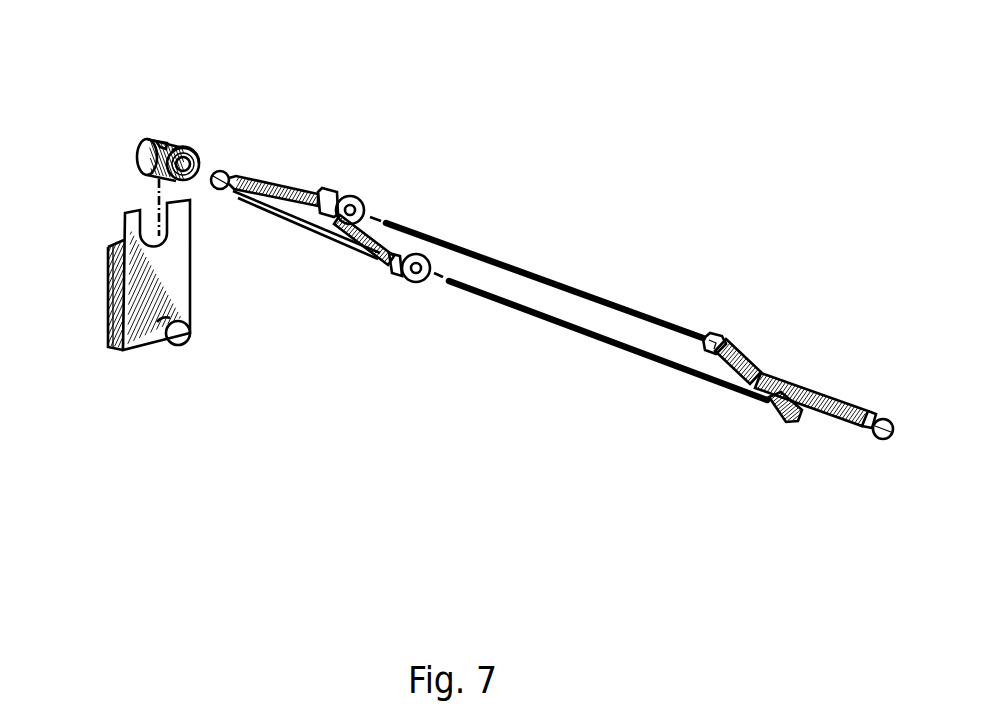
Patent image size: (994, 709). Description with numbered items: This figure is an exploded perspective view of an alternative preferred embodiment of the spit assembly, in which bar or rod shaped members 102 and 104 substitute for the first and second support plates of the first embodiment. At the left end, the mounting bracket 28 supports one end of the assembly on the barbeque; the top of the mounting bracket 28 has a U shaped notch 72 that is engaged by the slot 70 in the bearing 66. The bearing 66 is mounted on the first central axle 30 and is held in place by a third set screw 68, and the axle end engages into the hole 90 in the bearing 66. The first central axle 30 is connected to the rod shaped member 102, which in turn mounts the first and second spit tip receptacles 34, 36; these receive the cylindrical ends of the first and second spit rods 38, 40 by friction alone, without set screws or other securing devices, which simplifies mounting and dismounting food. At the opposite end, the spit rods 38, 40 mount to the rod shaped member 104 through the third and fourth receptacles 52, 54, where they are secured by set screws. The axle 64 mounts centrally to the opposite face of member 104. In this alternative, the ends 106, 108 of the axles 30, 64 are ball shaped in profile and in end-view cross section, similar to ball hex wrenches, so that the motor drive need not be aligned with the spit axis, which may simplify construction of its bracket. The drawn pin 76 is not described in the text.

The mounting bracket 28 is at (133, 347).
The pin 76 is at (177, 345).
The U shaped notch 72 is at (157, 218).
The slot 70 is at (152, 140).
The third set screw 68 is at (161, 139).
The bearing 66 is at (172, 146).
The hole 90 is at (198, 144).
The end of axle 30 106 is at (219, 189).
The first central axle 30 is at (262, 205).
The first spit tip receptacle 34 is at (333, 235).
The bar or rod shaped member 102 is at (372, 213).
The second spit tip receptacle 36 is at (400, 277).
The first spit rod 38 is at (472, 292).
The second spit rod 40 is at (518, 277).
The third receptacle 52 is at (709, 352).
The bar or rod shaped member 104 is at (747, 350).
The fourth receptacle 54 is at (767, 412).
The axle 64 is at (830, 410).
The end of axle 64 108 is at (878, 437).